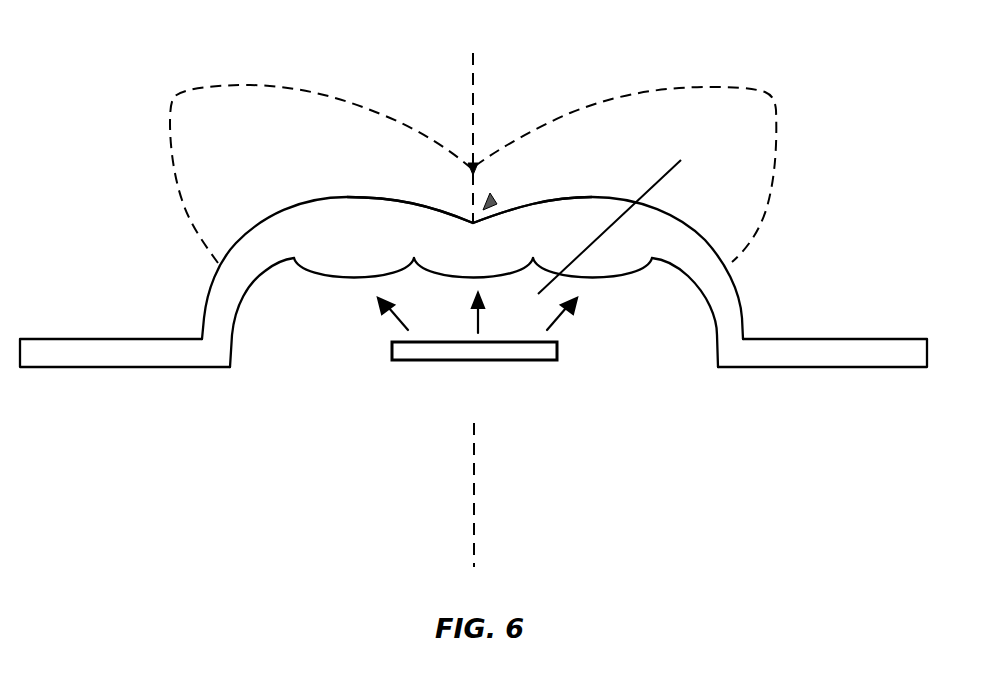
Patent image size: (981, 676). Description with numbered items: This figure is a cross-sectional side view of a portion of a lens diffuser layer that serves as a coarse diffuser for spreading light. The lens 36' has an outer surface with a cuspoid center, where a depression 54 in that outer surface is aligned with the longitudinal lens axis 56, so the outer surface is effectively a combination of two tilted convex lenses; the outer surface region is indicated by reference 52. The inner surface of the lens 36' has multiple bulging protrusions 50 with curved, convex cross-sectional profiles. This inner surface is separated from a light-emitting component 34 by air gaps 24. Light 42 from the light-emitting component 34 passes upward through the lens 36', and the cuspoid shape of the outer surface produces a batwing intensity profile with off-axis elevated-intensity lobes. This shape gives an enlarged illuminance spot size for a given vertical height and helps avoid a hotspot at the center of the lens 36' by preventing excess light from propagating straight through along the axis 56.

The air gap 24 is at (617, 218).
The light-emitting component 34 is at (437, 362).
The lens 36' is at (473, 271).
The light 42 is at (395, 313).
The bulging protrusion 50 is at (420, 268).
The outer surface 52 is at (591, 197).
The depression 54 is at (490, 200).
The longitudinal lens axis 56 is at (473, 78).